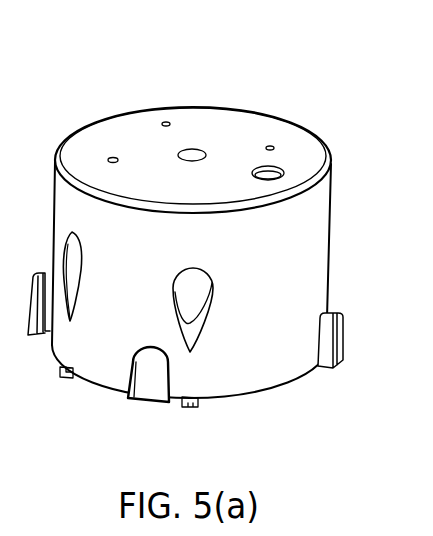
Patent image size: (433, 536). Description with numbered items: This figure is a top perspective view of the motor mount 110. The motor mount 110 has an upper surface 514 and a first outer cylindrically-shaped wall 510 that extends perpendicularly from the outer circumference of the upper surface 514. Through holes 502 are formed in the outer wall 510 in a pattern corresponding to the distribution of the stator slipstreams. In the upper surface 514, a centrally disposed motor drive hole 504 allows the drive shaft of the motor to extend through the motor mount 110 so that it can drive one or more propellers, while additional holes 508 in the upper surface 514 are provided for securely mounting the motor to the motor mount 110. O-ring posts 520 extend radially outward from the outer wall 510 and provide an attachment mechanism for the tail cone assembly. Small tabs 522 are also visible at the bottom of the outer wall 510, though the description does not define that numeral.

The motor mount 110 is at (80, 78).
The through holes 502 is at (72, 267).
The motor drive hole 504 is at (193, 153).
The additional holes 508 is at (113, 158).
The first outer cylindrically-shaped wall 510 is at (92, 368).
The upper surface 514 is at (299, 152).
The O-ring posts 520 is at (329, 370).
The foot 522 is at (188, 407).